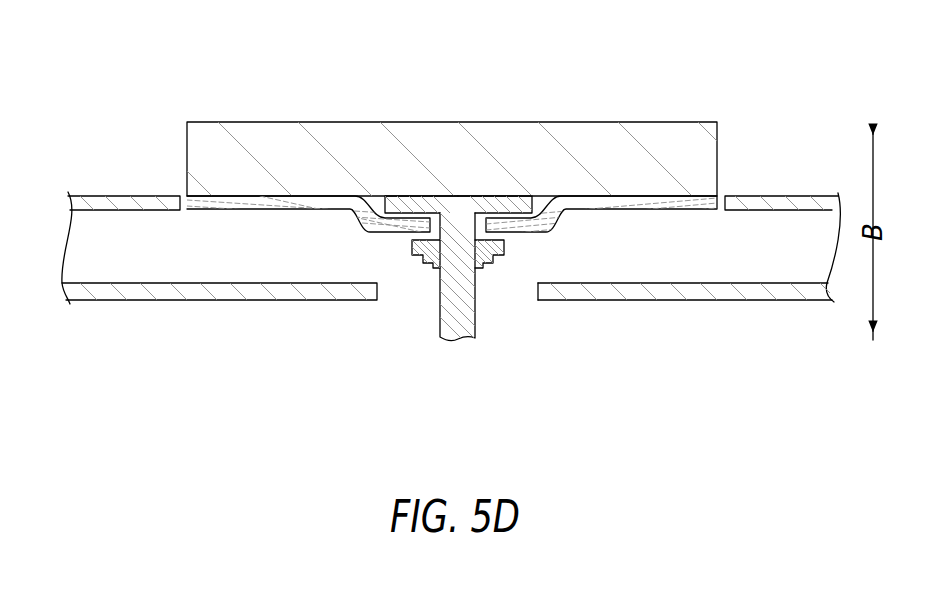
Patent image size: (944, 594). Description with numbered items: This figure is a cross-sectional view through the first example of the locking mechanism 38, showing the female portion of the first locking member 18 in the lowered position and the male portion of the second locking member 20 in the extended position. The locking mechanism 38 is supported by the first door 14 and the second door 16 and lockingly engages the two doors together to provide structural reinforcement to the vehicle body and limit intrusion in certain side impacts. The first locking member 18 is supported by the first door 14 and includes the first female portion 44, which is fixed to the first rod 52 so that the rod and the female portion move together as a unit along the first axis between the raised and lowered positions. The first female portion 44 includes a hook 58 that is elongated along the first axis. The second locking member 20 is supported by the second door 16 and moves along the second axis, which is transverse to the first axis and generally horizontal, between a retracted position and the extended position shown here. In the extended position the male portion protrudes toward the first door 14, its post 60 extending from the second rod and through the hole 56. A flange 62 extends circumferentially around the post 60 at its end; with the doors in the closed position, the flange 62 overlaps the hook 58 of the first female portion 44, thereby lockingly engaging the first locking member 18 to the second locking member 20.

The first door 14 is at (780, 194).
The second door 16 is at (722, 302).
The first locking member 18 is at (313, 114).
The second locking member 20 is at (433, 312).
The locking mechanism 38 is at (95, 322).
The first female portion 44 is at (678, 216).
The first rod 52 is at (670, 155).
The hole 56 is at (535, 290).
The hook 58 is at (417, 205).
The post 60 is at (467, 315).
The flange 62 is at (505, 205).